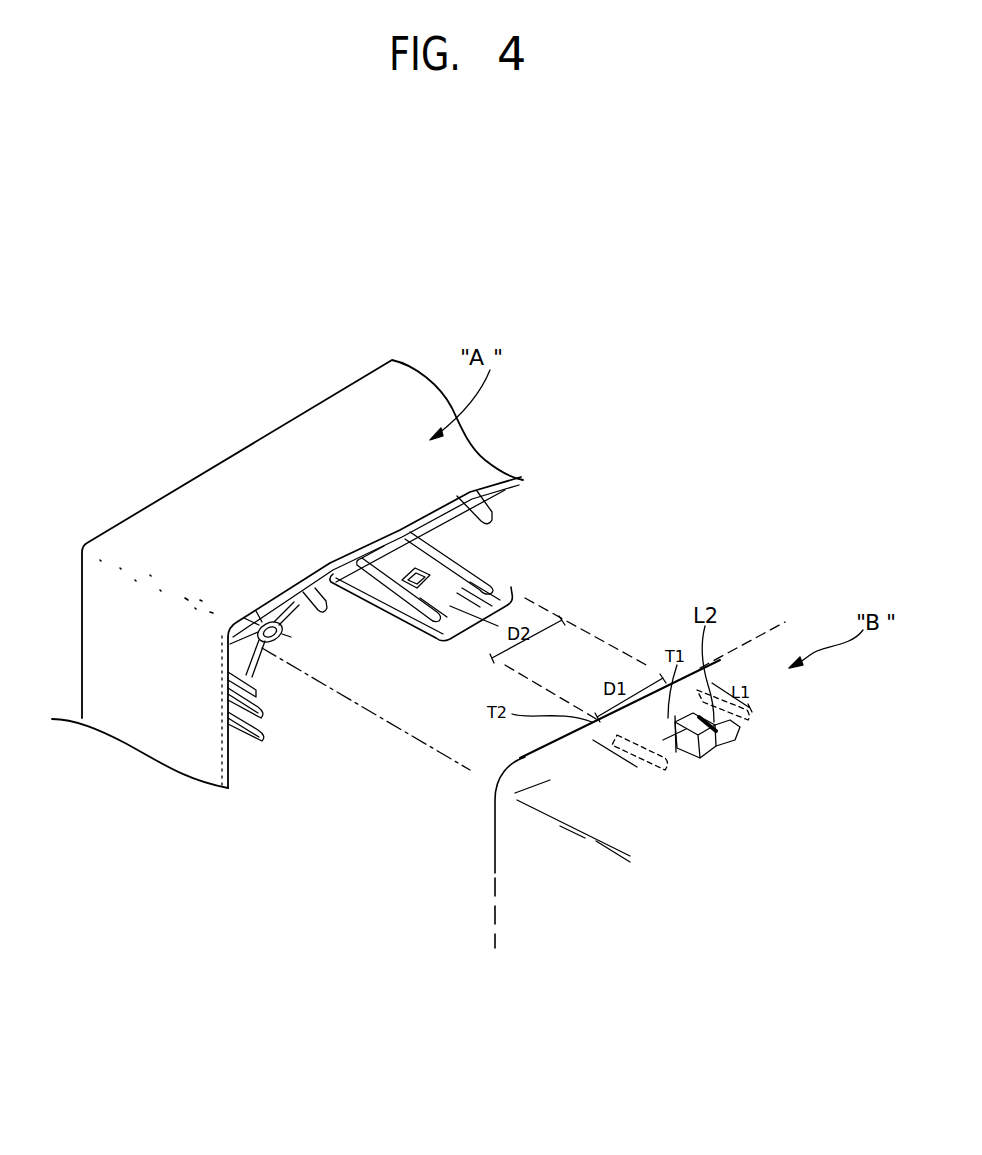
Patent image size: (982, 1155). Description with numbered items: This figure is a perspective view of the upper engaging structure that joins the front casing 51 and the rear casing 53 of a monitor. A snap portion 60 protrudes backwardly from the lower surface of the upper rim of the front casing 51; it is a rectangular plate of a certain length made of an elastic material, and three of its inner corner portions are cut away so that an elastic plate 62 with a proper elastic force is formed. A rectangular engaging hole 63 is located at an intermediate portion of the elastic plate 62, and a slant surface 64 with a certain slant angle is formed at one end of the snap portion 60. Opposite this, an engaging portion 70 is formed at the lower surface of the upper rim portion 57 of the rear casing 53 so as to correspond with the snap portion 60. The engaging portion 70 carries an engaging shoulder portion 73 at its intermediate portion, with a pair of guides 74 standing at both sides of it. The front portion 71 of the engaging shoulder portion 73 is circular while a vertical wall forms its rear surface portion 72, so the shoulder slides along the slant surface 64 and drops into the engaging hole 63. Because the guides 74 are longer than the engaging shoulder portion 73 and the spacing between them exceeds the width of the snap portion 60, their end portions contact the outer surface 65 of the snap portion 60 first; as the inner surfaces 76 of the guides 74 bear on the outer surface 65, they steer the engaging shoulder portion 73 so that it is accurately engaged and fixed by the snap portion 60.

The front casing 51 is at (241, 480).
The rear casing 53 is at (513, 796).
The upper rim portion 57 is at (545, 751).
The snap portion 60 is at (648, 556).
The elastic plate 62 is at (430, 542).
The engaging hole 63 is at (442, 562).
The slant surface 64 is at (517, 596).
The outer surface 65 is at (508, 578).
The engaging portion 70 is at (722, 801).
The front portion 71 is at (692, 756).
The rear surface portion 72 is at (710, 757).
The engaging shoulder portion 73 is at (740, 805).
The guides 74 is at (657, 773).
The inner surfaces 76 is at (748, 757).